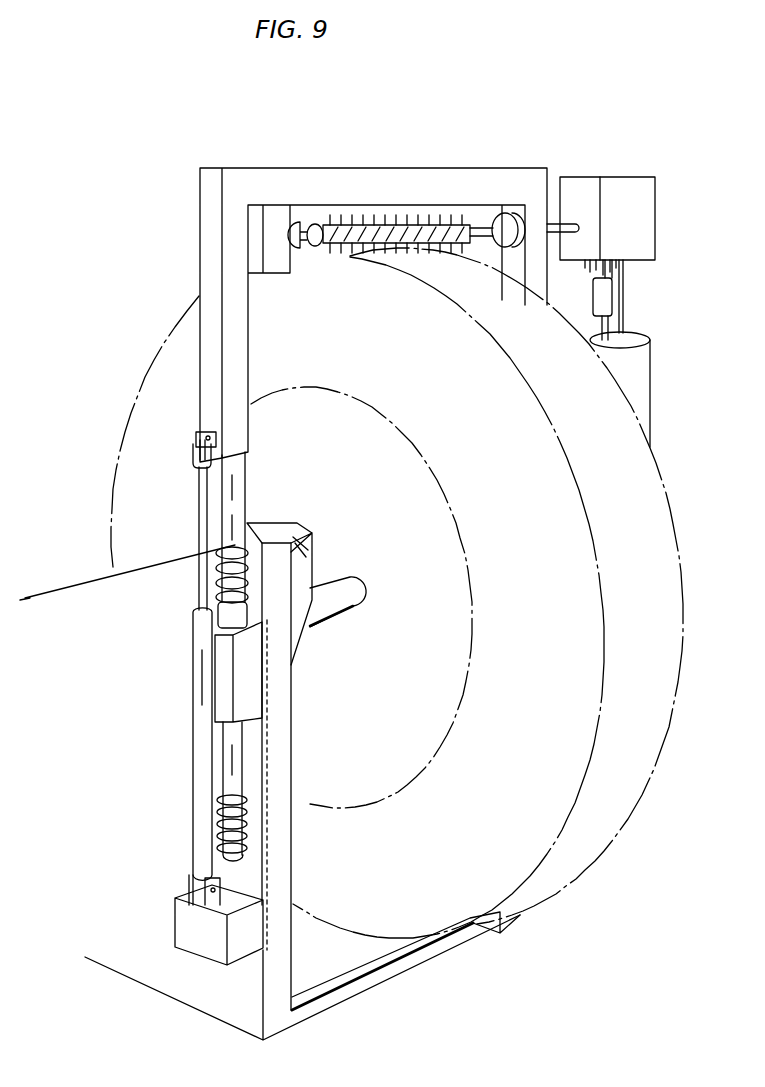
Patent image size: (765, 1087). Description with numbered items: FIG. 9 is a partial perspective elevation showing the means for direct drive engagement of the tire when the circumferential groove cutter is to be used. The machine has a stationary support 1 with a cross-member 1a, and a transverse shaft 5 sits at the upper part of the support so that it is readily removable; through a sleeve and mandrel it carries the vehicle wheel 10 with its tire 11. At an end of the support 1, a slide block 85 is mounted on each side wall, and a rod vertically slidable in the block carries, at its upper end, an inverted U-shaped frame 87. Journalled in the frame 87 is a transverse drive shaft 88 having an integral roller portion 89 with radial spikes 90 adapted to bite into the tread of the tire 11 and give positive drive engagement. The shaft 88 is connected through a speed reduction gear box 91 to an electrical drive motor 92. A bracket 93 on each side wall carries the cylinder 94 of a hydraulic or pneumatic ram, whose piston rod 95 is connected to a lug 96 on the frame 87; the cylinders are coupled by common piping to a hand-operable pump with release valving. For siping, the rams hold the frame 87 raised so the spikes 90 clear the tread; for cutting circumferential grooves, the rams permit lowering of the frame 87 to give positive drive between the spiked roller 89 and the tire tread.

The stationary support 1 is at (292, 840).
The cross-member 1a is at (368, 975).
The transverse shaft 5 is at (350, 600).
The vehicle wheel 10 is at (470, 608).
The tire 11 is at (684, 613).
The slide block 85 is at (258, 702).
The inverted U-shaped frame 87 is at (270, 186).
The transverse drive shaft 88 is at (483, 228).
The roller portion 89 is at (414, 222).
The radial spikes 90 is at (358, 221).
The speed reduction gear box 91 is at (618, 188).
The electrical drive motor 92 is at (641, 366).
The bracket 93 is at (190, 921).
The cylinder 94 is at (191, 820).
The piston rod 95 is at (197, 530).
The lug 96 is at (205, 432).